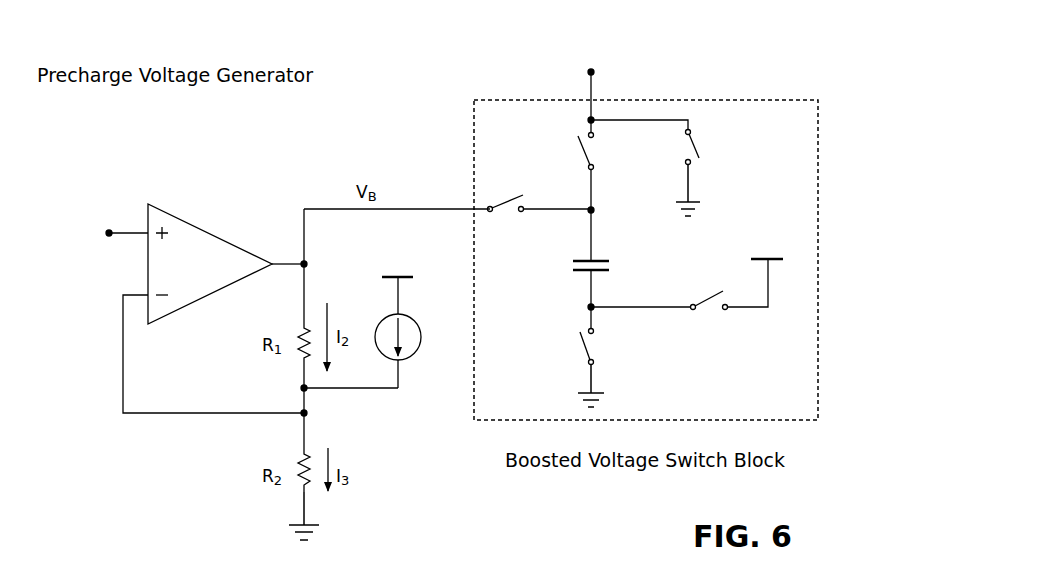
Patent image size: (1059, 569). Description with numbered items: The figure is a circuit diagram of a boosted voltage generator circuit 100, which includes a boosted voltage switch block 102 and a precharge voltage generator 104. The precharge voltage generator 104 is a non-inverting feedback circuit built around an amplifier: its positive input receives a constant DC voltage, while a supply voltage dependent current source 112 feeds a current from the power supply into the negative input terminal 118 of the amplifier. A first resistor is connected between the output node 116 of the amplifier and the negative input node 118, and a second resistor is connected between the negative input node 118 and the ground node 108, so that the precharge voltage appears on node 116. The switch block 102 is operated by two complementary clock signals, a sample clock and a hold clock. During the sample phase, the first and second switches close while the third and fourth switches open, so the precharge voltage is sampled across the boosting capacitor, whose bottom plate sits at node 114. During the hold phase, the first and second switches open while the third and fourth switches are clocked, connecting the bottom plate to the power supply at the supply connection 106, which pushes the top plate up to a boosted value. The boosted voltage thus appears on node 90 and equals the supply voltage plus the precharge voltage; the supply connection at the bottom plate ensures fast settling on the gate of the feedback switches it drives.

The boosted voltage generator circuit 100 is at (780, 46).
The boosted voltage switch block 102 is at (819, 155).
The precharge voltage generator 104 is at (182, 161).
The VDD supply node 106 is at (773, 262).
The ground node 108 is at (312, 525).
The supply voltage dependent current source 112 is at (414, 353).
The node 114 is at (588, 306).
The output node 116 is at (306, 262).
The negative input terminal 118 is at (306, 414).
The boosted voltage node 90 is at (596, 72).